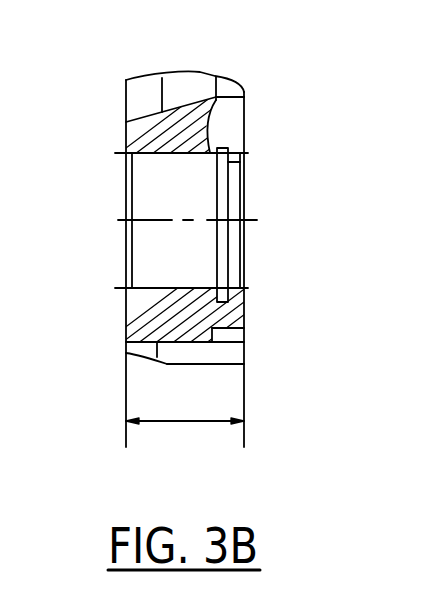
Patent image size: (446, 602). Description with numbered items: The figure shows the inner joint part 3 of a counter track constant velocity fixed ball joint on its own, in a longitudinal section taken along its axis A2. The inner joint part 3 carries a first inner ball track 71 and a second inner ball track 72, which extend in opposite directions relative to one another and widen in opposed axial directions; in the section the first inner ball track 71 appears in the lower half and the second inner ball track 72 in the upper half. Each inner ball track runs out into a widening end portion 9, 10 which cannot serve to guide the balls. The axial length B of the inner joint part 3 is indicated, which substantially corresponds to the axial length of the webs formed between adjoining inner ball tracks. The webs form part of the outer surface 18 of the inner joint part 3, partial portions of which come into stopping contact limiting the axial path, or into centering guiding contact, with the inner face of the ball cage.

The inner joint part 3 is at (223, 62).
The outer surface 18 is at (197, 73).
The second inner ball track 72 is at (212, 79).
The axis A2 is at (146, 220).
The widening end portion 9 is at (153, 357).
The first inner ball track 71 is at (228, 348).
The widening end portion 10 is at (223, 357).
The axial length B is at (185, 441).